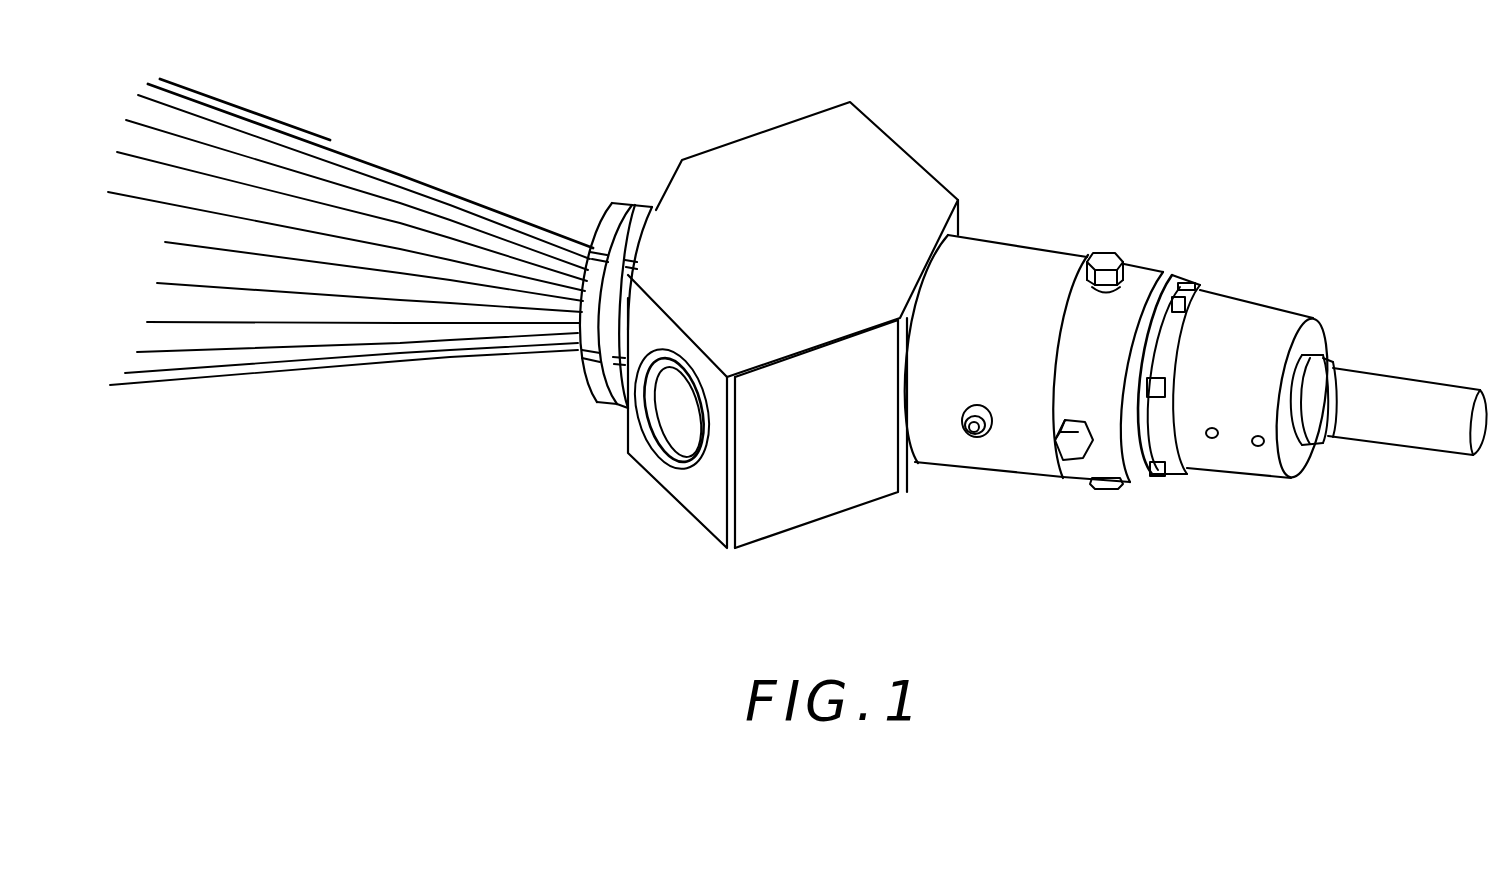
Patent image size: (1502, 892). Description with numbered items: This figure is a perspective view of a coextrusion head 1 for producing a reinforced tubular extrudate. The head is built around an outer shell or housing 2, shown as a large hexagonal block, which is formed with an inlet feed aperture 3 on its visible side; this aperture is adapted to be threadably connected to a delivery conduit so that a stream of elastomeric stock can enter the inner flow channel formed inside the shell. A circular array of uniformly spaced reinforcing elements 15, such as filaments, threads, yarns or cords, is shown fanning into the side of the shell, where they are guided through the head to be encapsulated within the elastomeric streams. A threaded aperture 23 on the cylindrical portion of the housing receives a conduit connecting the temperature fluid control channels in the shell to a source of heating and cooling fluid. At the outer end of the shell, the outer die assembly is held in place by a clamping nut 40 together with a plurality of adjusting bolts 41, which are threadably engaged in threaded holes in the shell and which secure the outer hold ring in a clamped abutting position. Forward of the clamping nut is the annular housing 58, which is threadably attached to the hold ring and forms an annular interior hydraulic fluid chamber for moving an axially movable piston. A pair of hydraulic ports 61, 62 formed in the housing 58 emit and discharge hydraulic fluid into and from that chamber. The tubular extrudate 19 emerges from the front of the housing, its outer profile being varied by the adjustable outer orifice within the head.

The coextrusion head 1 is at (907, 135).
The outer shell or housing 2 is at (707, 500).
The inlet feed aperture 3 is at (677, 417).
The reinforcing elements 15 is at (147, 203).
The tubular extrudate 19 is at (1423, 410).
The threaded aperture 23 is at (972, 441).
The clamping nut 40 is at (1182, 287).
The adjusting bolts 41 is at (1104, 258).
The annular housing 58 is at (1265, 325).
The hydraulic port 61 is at (1260, 449).
The hydraulic port 62 is at (1210, 442).